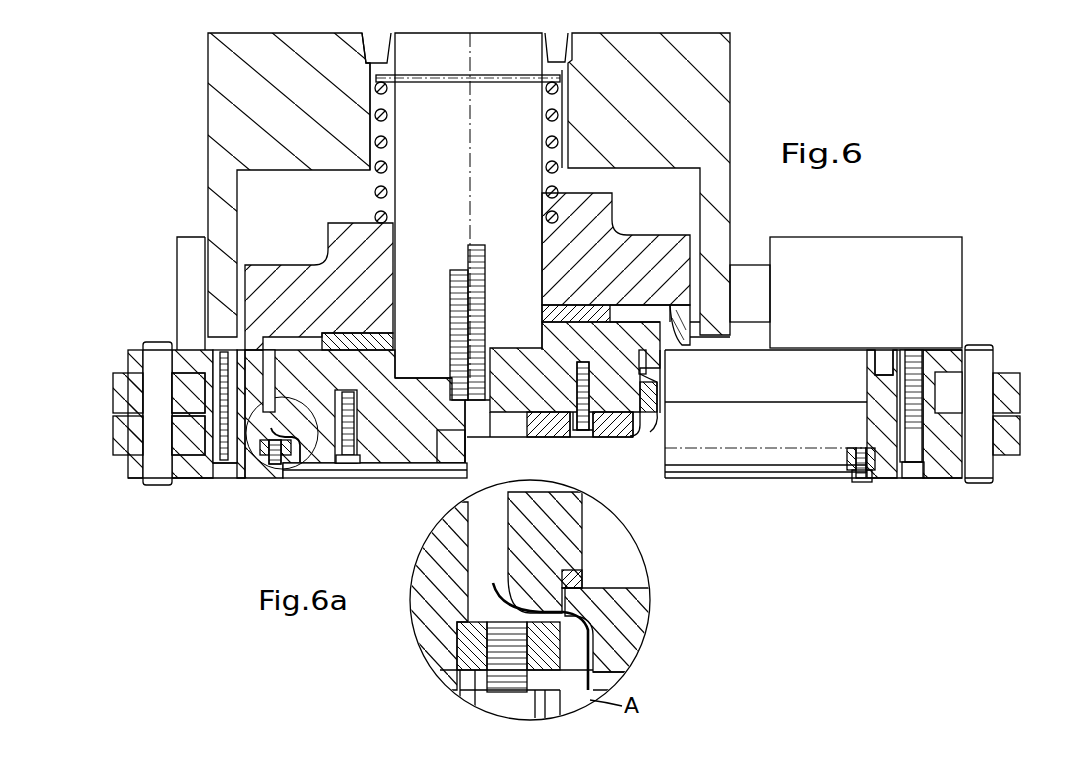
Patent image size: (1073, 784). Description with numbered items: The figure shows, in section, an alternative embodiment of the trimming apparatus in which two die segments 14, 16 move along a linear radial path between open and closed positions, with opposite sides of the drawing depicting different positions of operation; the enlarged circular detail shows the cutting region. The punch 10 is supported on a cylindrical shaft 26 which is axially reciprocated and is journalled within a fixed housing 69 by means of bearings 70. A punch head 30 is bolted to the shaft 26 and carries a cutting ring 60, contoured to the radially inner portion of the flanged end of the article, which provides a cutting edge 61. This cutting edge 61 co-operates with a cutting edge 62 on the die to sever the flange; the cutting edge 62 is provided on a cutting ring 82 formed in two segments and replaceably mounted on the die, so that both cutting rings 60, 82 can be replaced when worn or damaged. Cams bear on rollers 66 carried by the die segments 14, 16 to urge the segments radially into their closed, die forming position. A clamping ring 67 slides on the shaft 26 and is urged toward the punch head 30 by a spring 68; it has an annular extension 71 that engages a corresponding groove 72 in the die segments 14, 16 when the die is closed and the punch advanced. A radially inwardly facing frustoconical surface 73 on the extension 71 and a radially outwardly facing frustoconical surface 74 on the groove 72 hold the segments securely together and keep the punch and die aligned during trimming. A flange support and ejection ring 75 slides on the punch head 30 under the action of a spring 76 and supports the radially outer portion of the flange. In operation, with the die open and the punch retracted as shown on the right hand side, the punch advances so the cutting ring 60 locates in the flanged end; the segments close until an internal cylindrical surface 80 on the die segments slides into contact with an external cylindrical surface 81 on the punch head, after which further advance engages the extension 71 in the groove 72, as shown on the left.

In FIG. 6, the punch 10 is at (543, 440).
In FIG. 6, the die segment 14 is at (200, 480).
In FIG. 6, the die segment 16 is at (909, 484).
In FIG. 6, the cylindrical shaft 26 is at (512, 175).
In FIG. 6, the punch head 30 is at (496, 438).
In FIG. 6, the cutting ring 60 is at (530, 438).
In FIG. 6A, the cutting ring 60 is at (640, 642).
In FIG. 6A, the cutting edge 61 is at (580, 600).
In FIG. 6A, the cutting edge 62 is at (580, 605).
In FIG. 6, the roller 66 is at (116, 428).
In FIG. 6, the clamping ring 67 is at (616, 232).
In FIG. 6, the spring 68 is at (370, 106).
In FIG. 6, the fixed housing 69 is at (728, 82).
In FIG. 6, the bearing 70 is at (572, 50).
In FIG. 6, the annular extension 71 is at (692, 330).
In FIG. 6, the groove 72 is at (908, 354).
In FIG. 6, the frustoconical surface 73 is at (684, 302).
In FIG. 6, the frustoconical surface 74 is at (880, 368).
In FIG. 6, the flange support and ejection ring 75 is at (655, 414).
In FIG. 6, the spring 76 is at (662, 384).
In FIG. 6, the internal cylindrical surface 80 is at (865, 382).
In FIG. 6, the external cylindrical surface 81 is at (666, 360).
In FIG. 6, the cutting ring 82 is at (846, 453).
In FIG. 6A, the cutting ring 82 is at (465, 646).